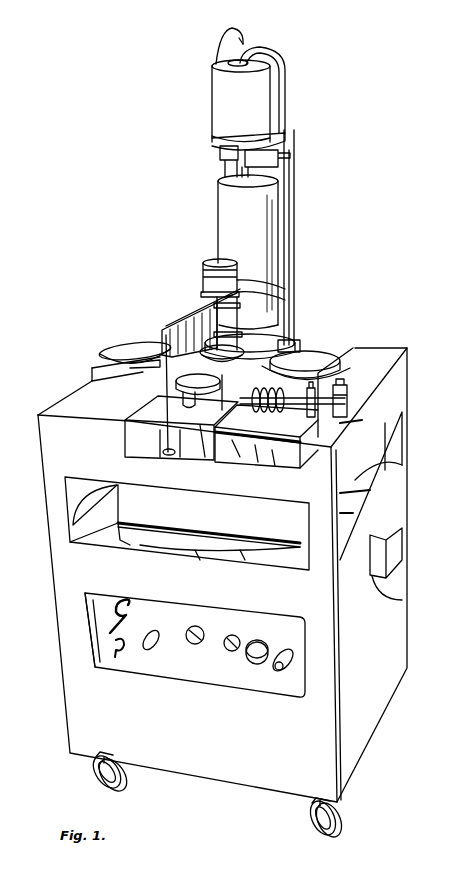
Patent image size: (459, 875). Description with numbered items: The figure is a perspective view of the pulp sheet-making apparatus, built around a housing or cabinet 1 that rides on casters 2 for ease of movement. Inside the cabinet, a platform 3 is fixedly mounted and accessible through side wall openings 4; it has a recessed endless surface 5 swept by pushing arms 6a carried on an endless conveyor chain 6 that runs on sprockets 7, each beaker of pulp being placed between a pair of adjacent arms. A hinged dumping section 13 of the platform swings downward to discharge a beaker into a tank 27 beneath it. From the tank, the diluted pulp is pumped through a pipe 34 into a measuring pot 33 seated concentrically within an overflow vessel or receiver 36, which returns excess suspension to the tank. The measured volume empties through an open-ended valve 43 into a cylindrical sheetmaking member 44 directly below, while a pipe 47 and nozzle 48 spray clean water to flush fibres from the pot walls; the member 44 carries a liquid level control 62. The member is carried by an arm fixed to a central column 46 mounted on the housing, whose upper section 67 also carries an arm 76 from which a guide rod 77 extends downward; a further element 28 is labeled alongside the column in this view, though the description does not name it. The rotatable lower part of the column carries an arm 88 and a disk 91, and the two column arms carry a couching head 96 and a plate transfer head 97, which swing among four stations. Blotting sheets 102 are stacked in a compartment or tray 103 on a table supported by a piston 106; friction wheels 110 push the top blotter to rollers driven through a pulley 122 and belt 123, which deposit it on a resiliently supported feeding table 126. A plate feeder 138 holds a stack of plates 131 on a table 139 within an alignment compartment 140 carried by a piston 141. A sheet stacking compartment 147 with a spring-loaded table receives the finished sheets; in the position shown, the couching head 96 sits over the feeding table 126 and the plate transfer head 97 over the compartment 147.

The housing or cabinet 1 is at (400, 352).
The casters 2 is at (103, 777).
The platform 3 is at (190, 548).
The side wall openings 4 is at (386, 442).
The recessed endless surface 5 is at (235, 549).
The chain 6 is at (75, 545).
The pushing arms 6a is at (118, 545).
The sprockets 7 is at (110, 515).
The dumping section 13 is at (395, 462).
The tank 27 is at (395, 513).
The rod 28 is at (282, 176).
The measuring pot 33 is at (235, 62).
The pipe 34 is at (287, 96).
The overflow vessel or receiver 36 is at (212, 97).
The open-ended valve 43 is at (255, 285).
The cylindrical sheetmaking member 44 is at (218, 222).
The central column 46 is at (295, 228).
The pipe 47 is at (238, 30).
The nozzle 48 is at (246, 42).
The liquid level control 62 is at (226, 170).
The upper column section 67 is at (195, 283).
The arm 76 is at (195, 305).
The guide rod 77 is at (180, 384).
The arm 88 is at (300, 345).
The disk 91 is at (238, 328).
The couching head 96 is at (130, 346).
The plate transfer head 97 is at (322, 354).
The blotting sheets 102 is at (235, 445).
The compartment or tray 103 is at (278, 470).
The piston 106 is at (258, 450).
The friction wheels 110 is at (268, 402).
The pulley 122 is at (316, 390).
The belt 123 is at (348, 402).
The feeding table 126 is at (345, 362).
The plates 131 is at (176, 392).
The plate feeder 138 is at (150, 438).
The table 139 is at (160, 432).
The compartment 140 is at (180, 440).
The piston 141 is at (203, 440).
The sheet stacking compartment 147 is at (98, 363).